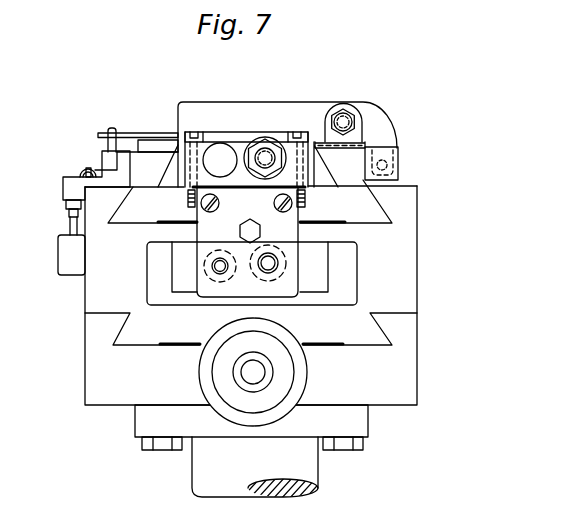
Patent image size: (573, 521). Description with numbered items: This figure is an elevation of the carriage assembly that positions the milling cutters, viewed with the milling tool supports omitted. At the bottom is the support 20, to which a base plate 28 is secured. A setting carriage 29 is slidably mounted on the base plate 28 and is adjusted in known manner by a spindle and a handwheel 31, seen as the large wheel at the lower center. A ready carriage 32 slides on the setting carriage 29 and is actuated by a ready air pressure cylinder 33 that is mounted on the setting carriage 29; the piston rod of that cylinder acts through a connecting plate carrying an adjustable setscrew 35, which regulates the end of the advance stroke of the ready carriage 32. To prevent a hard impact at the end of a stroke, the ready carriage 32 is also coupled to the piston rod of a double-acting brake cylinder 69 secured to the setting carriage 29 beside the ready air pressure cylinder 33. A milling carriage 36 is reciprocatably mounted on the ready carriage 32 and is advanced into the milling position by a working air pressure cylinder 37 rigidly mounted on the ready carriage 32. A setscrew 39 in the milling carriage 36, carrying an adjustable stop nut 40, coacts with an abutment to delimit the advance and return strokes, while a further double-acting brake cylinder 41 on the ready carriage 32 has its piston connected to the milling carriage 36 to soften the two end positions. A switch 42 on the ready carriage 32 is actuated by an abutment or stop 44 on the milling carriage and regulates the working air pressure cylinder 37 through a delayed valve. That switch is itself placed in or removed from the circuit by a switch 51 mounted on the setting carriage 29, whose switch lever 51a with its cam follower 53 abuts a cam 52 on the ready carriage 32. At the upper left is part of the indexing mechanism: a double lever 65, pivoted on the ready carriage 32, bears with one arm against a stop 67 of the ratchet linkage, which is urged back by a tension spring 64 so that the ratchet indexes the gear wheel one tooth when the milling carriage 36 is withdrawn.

The support 20 is at (307, 465).
The base plate 28 is at (408, 367).
The setting carriage 29 is at (408, 260).
The handwheel 31 is at (303, 372).
The ready carriage 32 is at (375, 209).
The ready air pressure cylinder 33 is at (278, 283).
The adjustable setscrew 35 is at (249, 224).
The milling carriage 36 is at (322, 173).
The working air pressure cylinder 37 is at (268, 145).
The setscrew 39 is at (348, 122).
The adjustable stop nut 40 is at (343, 115).
The double-acting brake cylinder 41 is at (220, 158).
The switch 42 is at (400, 148).
The abutment or stop 44 is at (400, 168).
The switch 51 is at (58, 260).
The switch lever 51a is at (72, 222).
The cam 52 is at (70, 187).
The cam follower 53 is at (67, 213).
The tension spring 64 is at (80, 170).
The double lever 65 is at (152, 133).
The stop 67 is at (110, 128).
The double-acting brake cylinder 69 is at (207, 258).